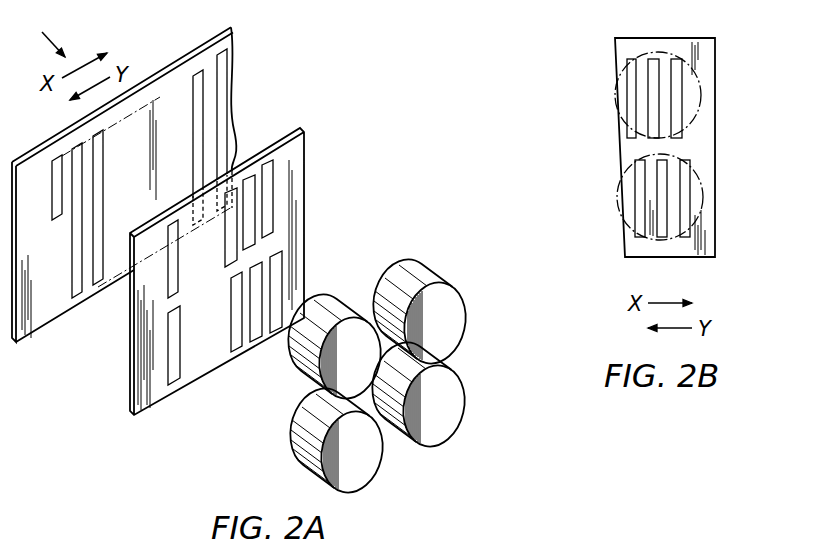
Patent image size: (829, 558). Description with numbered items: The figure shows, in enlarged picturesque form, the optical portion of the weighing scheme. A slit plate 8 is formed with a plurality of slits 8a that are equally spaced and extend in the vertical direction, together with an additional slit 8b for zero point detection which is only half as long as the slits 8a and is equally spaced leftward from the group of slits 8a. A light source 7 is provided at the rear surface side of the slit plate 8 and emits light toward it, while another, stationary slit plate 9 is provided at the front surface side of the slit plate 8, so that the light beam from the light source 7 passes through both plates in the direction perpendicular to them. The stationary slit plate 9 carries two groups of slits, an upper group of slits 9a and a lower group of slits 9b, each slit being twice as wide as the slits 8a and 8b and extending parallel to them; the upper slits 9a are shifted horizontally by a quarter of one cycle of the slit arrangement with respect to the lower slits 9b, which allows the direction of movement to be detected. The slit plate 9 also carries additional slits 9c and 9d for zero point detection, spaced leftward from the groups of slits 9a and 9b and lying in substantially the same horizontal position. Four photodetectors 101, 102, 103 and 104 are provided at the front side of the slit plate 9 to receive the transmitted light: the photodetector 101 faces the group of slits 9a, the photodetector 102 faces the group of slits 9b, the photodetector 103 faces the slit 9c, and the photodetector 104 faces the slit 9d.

In FIG. 2A, the light source 7 is at (44, 33).
In FIG. 2A, the slit plate 8 is at (196, 50).
In FIG. 2A, the slits 8a is at (228, 76).
In FIG. 2A, the additional slit 8b is at (54, 218).
In FIG. 2A, the stationary slit plate 9 is at (138, 363).
In FIG. 2B, the stationary slit plate 9 is at (620, 52).
In FIG. 2A, the upper group of slits 9a is at (282, 190).
In FIG. 2B, the upper group of slits 9a is at (620, 118).
In FIG. 2A, the lower group of slits 9b is at (295, 270).
In FIG. 2B, the lower group of slits 9b is at (628, 188).
In FIG. 2A, the additional slit 9c is at (178, 266).
In FIG. 2A, the additional slit 9d is at (180, 340).
In FIG. 2A, the photodetector 101 is at (411, 262).
In FIG. 2B, the photodetector 101 is at (617, 104).
In FIG. 2A, the photodetector 102 is at (448, 414).
In FIG. 2B, the photodetector 102 is at (620, 220).
In FIG. 2A, the photodetector 103 is at (300, 369).
In FIG. 2A, the photodetector 104 is at (294, 448).